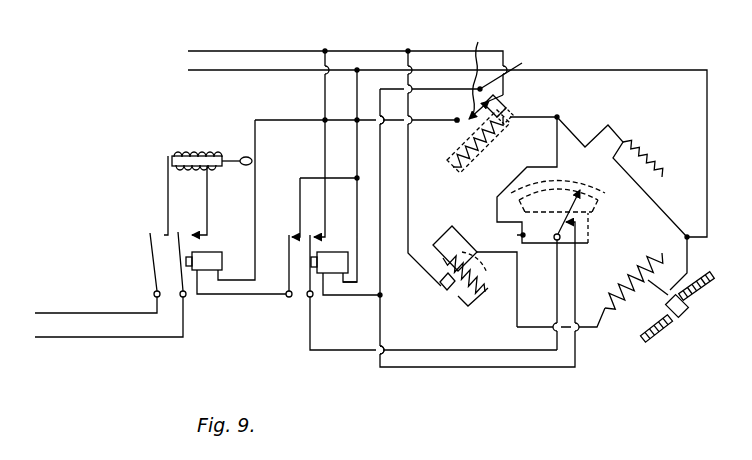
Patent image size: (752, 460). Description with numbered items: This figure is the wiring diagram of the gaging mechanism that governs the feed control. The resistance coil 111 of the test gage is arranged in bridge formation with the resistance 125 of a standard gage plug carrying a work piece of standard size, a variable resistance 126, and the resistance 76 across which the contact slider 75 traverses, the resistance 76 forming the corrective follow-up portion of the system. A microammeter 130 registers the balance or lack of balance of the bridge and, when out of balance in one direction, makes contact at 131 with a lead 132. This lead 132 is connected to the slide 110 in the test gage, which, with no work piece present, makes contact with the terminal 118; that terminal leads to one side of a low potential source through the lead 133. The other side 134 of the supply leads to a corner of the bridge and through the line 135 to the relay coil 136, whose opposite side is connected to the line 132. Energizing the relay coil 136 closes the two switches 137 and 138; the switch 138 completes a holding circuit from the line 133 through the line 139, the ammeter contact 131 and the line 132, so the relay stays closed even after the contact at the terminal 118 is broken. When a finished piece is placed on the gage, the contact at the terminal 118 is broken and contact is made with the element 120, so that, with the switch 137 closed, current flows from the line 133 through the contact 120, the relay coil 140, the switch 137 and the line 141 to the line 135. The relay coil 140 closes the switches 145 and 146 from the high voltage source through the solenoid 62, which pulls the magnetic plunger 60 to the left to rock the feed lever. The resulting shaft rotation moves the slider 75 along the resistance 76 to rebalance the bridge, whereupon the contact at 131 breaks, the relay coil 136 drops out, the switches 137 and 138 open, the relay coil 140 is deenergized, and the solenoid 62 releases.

The lead 133 is at (310, 49).
The other side of low potential supply 134 is at (300, 71).
The line 135 is at (357, 152).
The lead 132 is at (382, 247).
The element 120 is at (467, 133).
The slide 110 is at (488, 70).
The terminal 118 is at (519, 83).
The resistance coil 111 is at (445, 150).
The variable resistance 126 is at (646, 150).
The microammeter 130 is at (593, 211).
The contact 131 is at (555, 239).
The resistance 125 is at (463, 300).
The resistance coil 76 is at (628, 283).
The contact slider 75 is at (650, 310).
The line 141 is at (300, 187).
The switch 137 is at (288, 250).
The switch 138 is at (307, 283).
The line 139 is at (343, 346).
The relay coil 136 is at (337, 256).
The relay coil 140 is at (212, 253).
The solenoid 62 is at (189, 153).
The magnetic plunger 60 is at (216, 158).
The switch 145 is at (150, 245).
The switch 146 is at (193, 219).